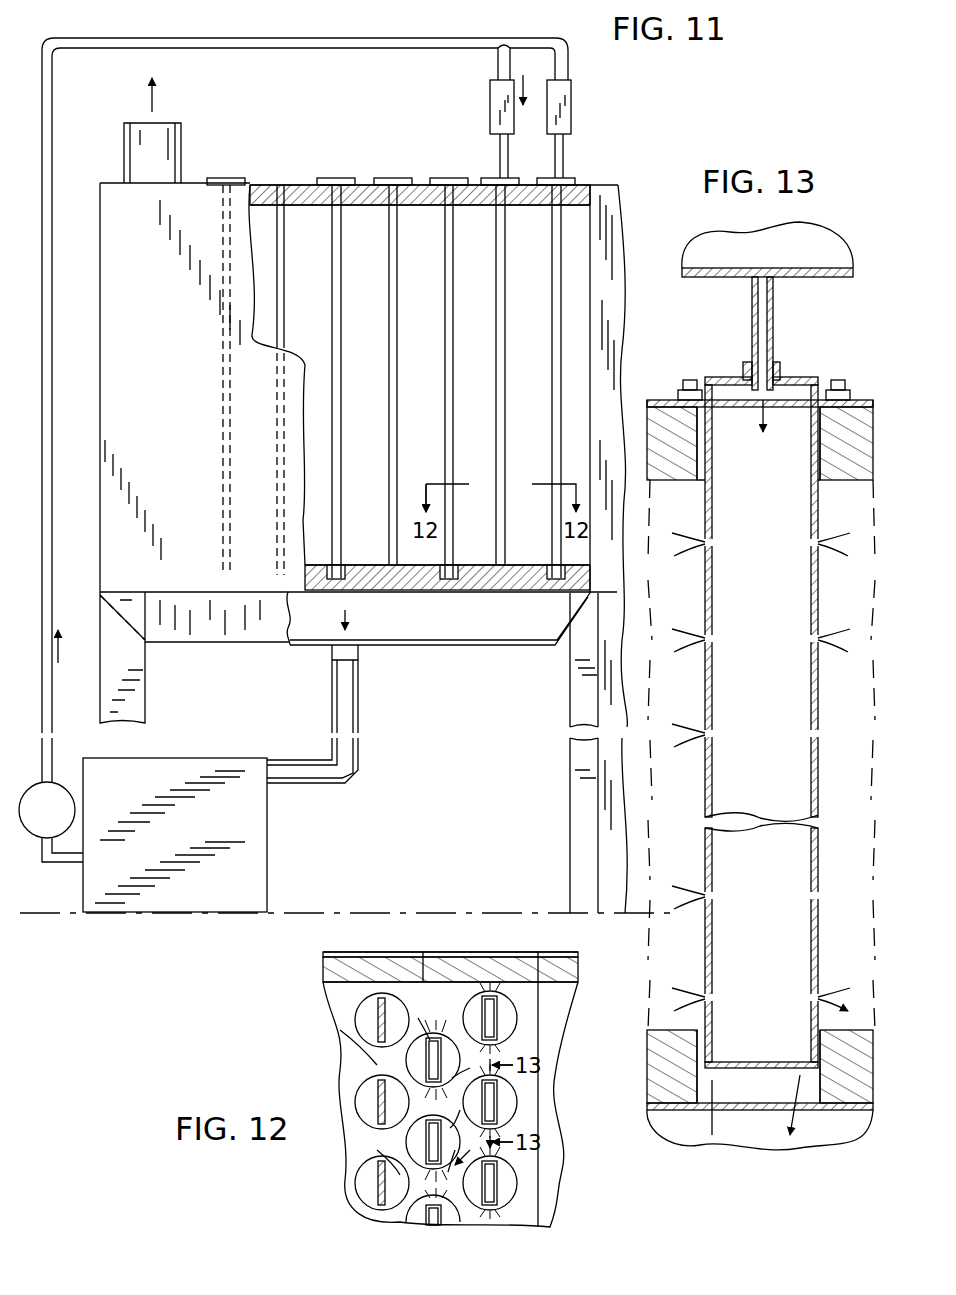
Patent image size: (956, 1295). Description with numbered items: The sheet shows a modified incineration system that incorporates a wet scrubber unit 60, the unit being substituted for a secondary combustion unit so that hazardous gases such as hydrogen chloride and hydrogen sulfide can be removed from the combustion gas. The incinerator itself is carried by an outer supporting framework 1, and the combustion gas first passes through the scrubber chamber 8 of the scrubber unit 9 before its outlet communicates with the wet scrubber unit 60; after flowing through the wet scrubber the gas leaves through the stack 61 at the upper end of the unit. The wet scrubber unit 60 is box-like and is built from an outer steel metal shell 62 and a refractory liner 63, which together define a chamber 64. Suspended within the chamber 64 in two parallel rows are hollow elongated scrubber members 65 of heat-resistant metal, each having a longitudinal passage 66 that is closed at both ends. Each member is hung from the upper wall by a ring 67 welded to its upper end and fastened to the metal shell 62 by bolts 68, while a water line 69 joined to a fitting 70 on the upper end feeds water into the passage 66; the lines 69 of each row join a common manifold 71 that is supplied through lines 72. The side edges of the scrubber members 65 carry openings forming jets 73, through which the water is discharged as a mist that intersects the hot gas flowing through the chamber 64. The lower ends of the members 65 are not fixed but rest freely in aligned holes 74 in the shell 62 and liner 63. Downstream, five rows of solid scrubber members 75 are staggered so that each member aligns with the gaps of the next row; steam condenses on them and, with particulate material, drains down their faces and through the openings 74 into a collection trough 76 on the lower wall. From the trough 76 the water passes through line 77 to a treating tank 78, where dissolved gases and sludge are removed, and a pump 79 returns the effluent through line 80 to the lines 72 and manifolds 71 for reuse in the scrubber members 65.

In FIG. 11, the outer supporting framework 1 is at (145, 672).
In FIG. 12, the scrubber chamber 8 is at (553, 1165).
In FIG. 11, the scrubber unit 9 is at (618, 180).
In FIG. 12, the scrubber unit 9 is at (565, 953).
In FIG. 11, the wet scrubber unit 60 is at (110, 182).
In FIG. 11, the stack 61 is at (181, 145).
In FIG. 11, the metal shell 62 is at (318, 205).
In FIG. 12, the metal shell 62 is at (340, 952).
In FIG. 13, the metal shell 62 is at (655, 400).
In FIG. 11, the refractory liner 63 is at (322, 205).
In FIG. 12, the refractory liner 63 is at (330, 972).
In FIG. 13, the refractory liner 63 is at (680, 475).
In FIG. 11, the chamber 64 is at (415, 230).
In FIG. 12, the chamber 64 is at (415, 978).
In FIG. 11, the hollow scrubber member 65 is at (557, 412).
In FIG. 12, the hollow scrubber member 65 is at (440, 1040).
In FIG. 13, the hollow scrubber member 65 is at (820, 779).
In FIG. 13, the longitudinal passage 66 is at (812, 872).
In FIG. 13, the ring 67 is at (852, 397).
In FIG. 13, the bolt 68 is at (690, 380).
In FIG. 11, the water line 69 is at (509, 160).
In FIG. 13, the water line 69 is at (775, 315).
In FIG. 11, the fitting 70 is at (497, 178).
In FIG. 13, the fitting 70 is at (780, 370).
In FIG. 11, the manifold 71 is at (497, 112).
In FIG. 13, the manifold 71 is at (740, 275).
In FIG. 11, the line 72 is at (497, 68).
In FIG. 13, the jet 73 is at (810, 542).
In FIG. 12, the hole 74 is at (340, 1060).
In FIG. 13, the hole 74 is at (740, 1093).
In FIG. 11, the solid scrubber member 75 is at (336, 327).
In FIG. 12, the solid scrubber member 75 is at (378, 1018).
In FIG. 11, the collection trough 76 is at (467, 645).
In FIG. 13, the collection trough 76 is at (796, 1145).
In FIG. 11, the line 77 is at (350, 762).
In FIG. 11, the treating tank 78 is at (253, 843).
In FIG. 11, the pump 79 is at (50, 763).
In FIG. 11, the line 80 is at (305, 450).